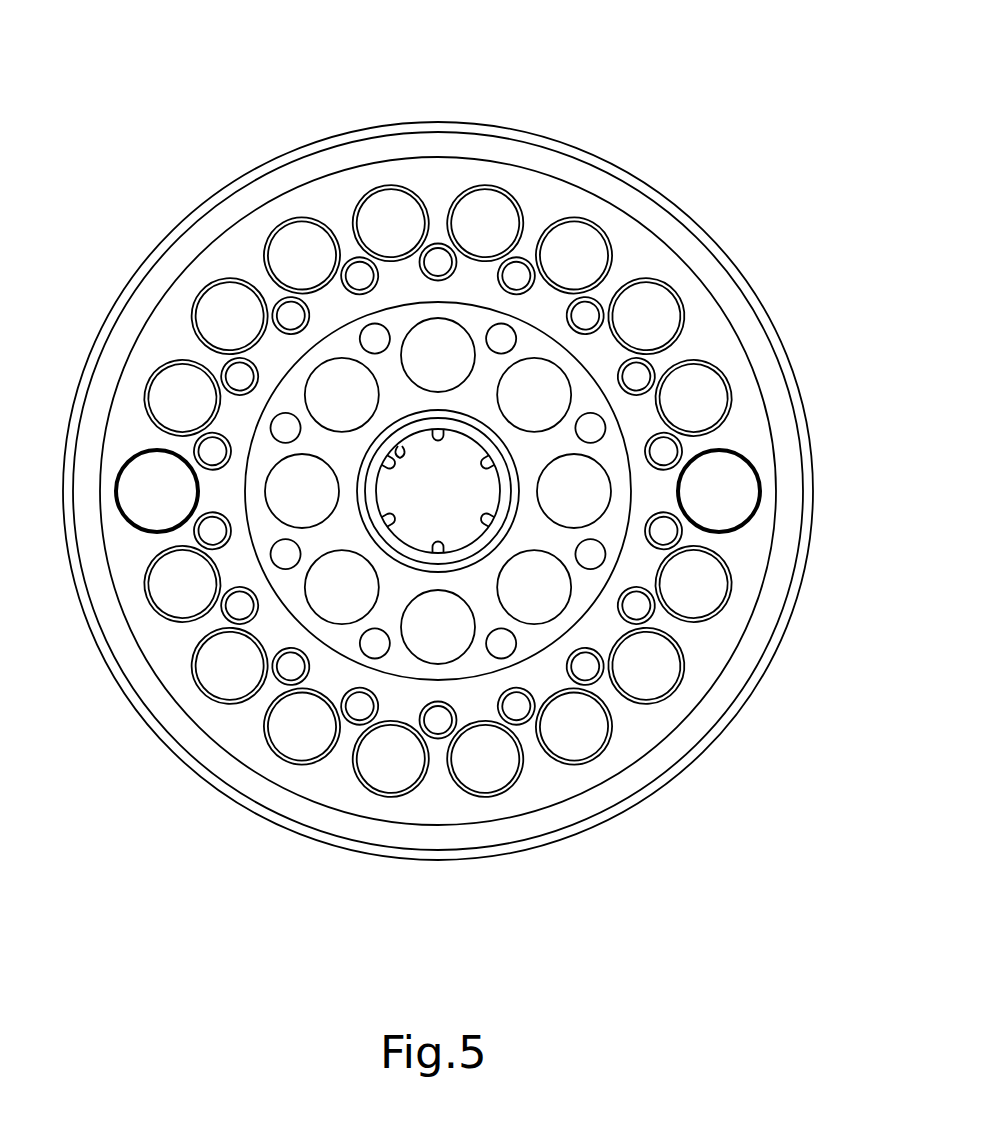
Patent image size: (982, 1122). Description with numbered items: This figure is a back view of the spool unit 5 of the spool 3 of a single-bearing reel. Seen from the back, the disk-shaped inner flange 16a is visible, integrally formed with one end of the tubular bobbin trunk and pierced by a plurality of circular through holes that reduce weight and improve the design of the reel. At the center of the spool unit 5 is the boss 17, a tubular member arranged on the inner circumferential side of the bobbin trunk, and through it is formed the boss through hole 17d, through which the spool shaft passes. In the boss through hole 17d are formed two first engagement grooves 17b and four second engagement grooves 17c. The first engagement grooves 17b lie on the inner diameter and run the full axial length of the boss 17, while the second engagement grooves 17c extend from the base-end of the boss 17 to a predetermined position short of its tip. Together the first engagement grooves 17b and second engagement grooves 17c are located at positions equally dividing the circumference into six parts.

The spool 3 is at (643, 120).
The spool unit 5 is at (598, 143).
The inner flange 16a is at (670, 205).
The boss 17 is at (400, 452).
The first engagement grooves 17b is at (443, 435).
The second engagement grooves 17c is at (478, 458).
The boss through hole 17d is at (398, 450).